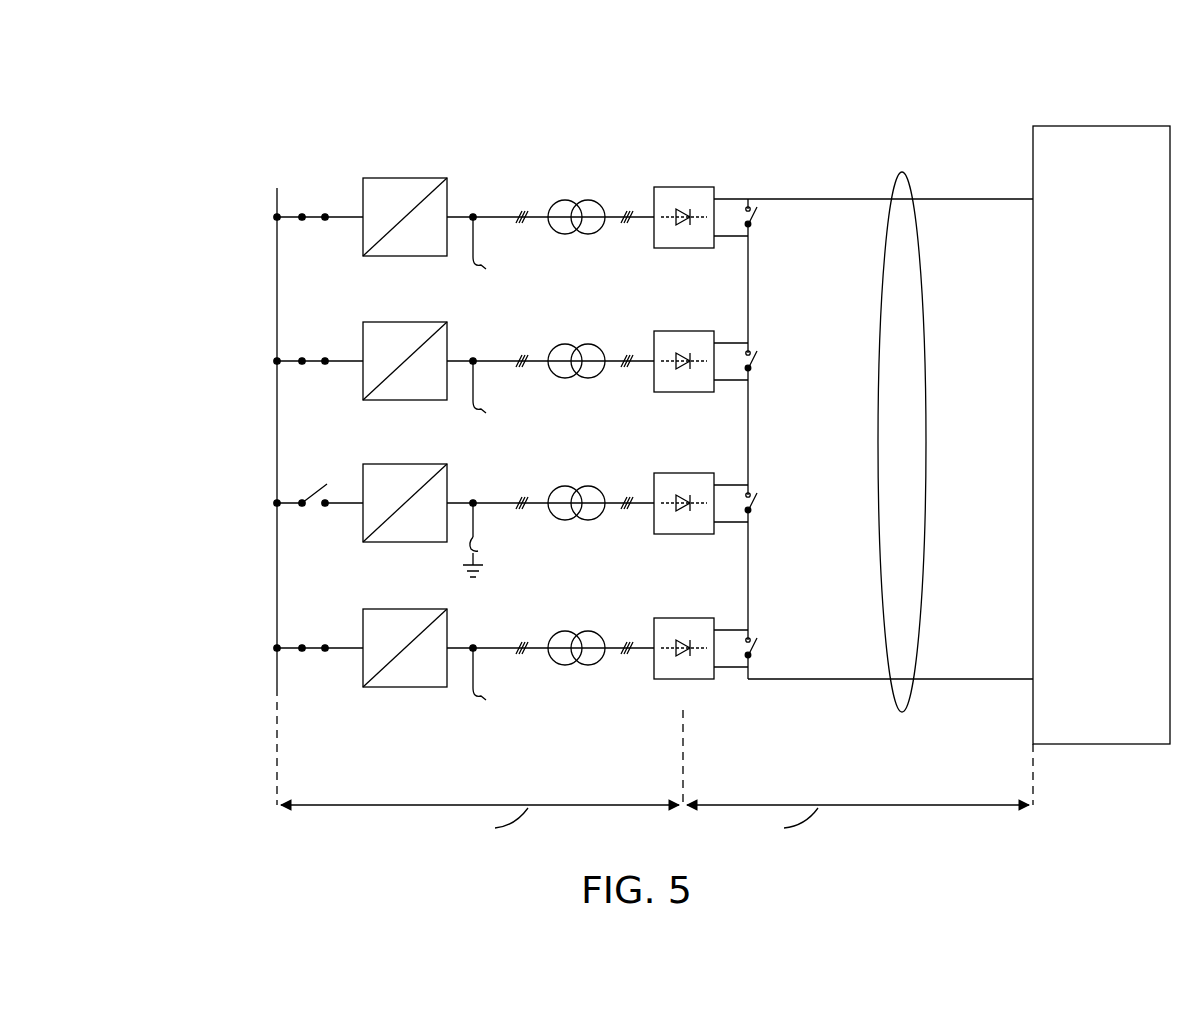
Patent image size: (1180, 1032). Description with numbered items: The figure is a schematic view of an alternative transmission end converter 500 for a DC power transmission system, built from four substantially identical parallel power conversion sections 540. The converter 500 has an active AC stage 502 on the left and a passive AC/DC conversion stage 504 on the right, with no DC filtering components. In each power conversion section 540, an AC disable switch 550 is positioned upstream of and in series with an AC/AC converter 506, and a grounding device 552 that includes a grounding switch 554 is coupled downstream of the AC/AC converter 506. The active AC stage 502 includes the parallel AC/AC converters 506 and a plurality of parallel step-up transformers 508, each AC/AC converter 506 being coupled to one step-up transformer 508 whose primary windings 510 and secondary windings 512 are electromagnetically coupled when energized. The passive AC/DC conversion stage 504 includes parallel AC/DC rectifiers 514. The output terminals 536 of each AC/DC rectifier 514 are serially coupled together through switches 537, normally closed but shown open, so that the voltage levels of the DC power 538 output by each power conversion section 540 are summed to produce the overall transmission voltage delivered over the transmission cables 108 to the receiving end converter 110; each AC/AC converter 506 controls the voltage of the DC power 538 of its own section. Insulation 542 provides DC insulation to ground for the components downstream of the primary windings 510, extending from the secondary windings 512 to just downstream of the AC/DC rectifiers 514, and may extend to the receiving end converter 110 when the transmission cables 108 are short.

The transmission end converter 500 is at (796, 114).
The transmission cables 108 is at (902, 712).
The receiving end converter 110 is at (1103, 125).
The active AC stage 502 is at (447, 741).
The passive AC/DC conversion stage 504 is at (778, 741).
The AC/AC converter 506 is at (405, 178).
The step-up transformer 508 is at (552, 673).
The primary windings 510 is at (566, 665).
The secondary windings 512 is at (590, 631).
The AC/DC rectifier 514 is at (663, 680).
The output terminals 536 is at (720, 673).
The switches 537 is at (757, 222).
The DC power 538 is at (752, 186).
The power conversion section 540 is at (264, 217).
The insulation 542 is at (628, 182).
The AC disable switch 550 is at (313, 211).
The grounding device 552 is at (457, 567).
The grounding switch 554 is at (480, 539).